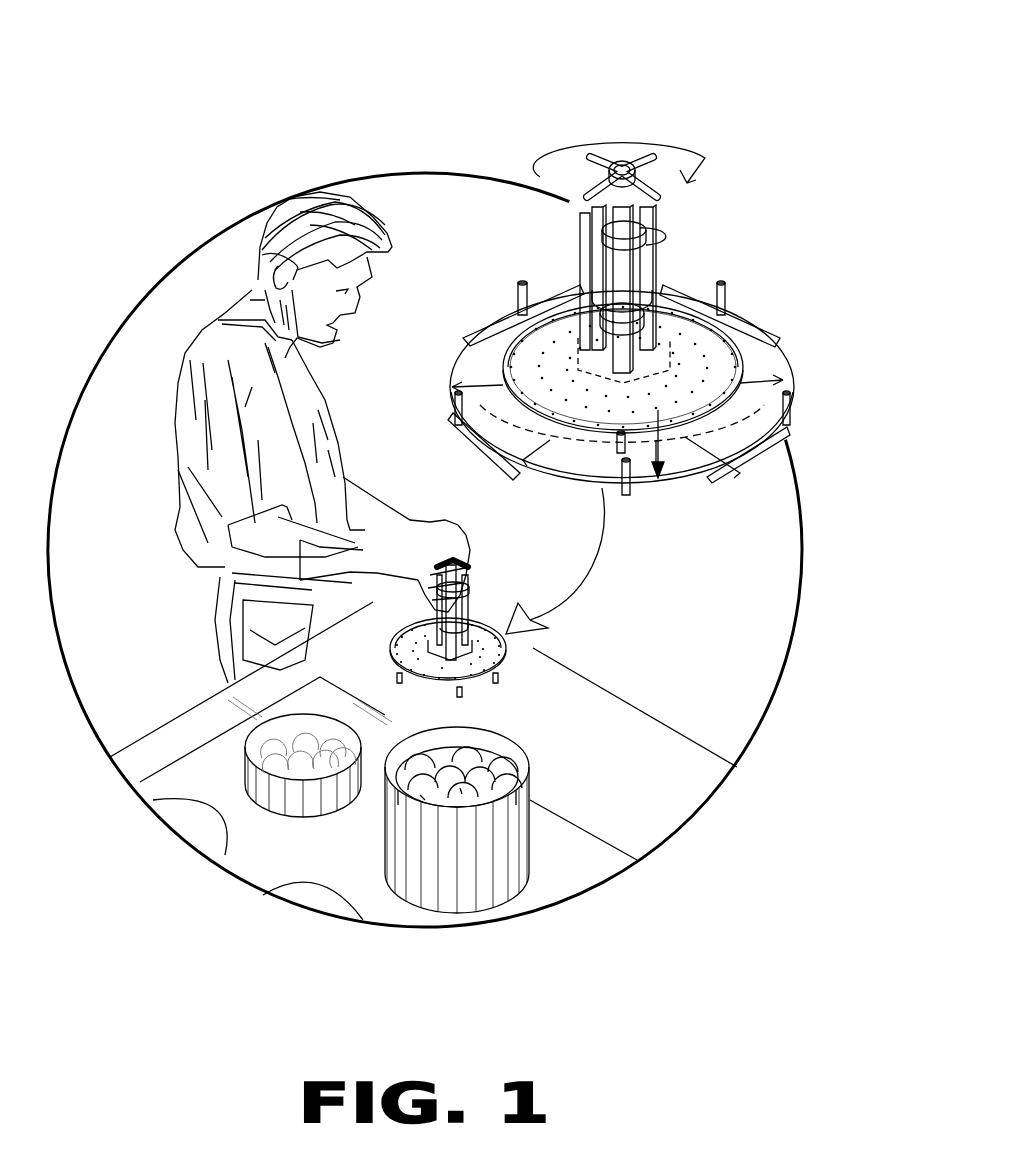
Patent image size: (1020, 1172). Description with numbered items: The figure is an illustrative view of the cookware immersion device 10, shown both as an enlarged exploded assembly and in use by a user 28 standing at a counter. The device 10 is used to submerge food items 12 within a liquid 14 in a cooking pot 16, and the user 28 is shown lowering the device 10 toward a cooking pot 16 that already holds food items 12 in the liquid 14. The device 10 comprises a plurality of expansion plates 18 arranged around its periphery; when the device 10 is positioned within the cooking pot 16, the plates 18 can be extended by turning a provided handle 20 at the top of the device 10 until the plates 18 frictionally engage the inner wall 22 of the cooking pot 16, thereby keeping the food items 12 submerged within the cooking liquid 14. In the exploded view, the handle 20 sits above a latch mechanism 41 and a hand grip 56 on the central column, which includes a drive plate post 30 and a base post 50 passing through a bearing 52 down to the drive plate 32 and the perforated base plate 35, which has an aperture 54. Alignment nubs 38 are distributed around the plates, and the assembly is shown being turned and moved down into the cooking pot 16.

The cookware immersion device 10 is at (606, 359).
The food item 12 is at (512, 787).
The liquid 14 is at (402, 782).
The cooking pot 16 is at (481, 777).
The expansion plate 18 is at (783, 360).
The handle 20 is at (615, 160).
The inner wall 22 is at (485, 738).
The user 28 is at (185, 497).
The drive plate post 30 is at (640, 277).
The drive plate 32 is at (583, 377).
The base plate 35 is at (522, 360).
The alignment nub 38 is at (725, 293).
The latch mechanism 41 is at (650, 232).
The base post 50 is at (598, 297).
The bearing 52 is at (600, 322).
The aperture 54 is at (657, 455).
The hand grip 56 is at (580, 237).